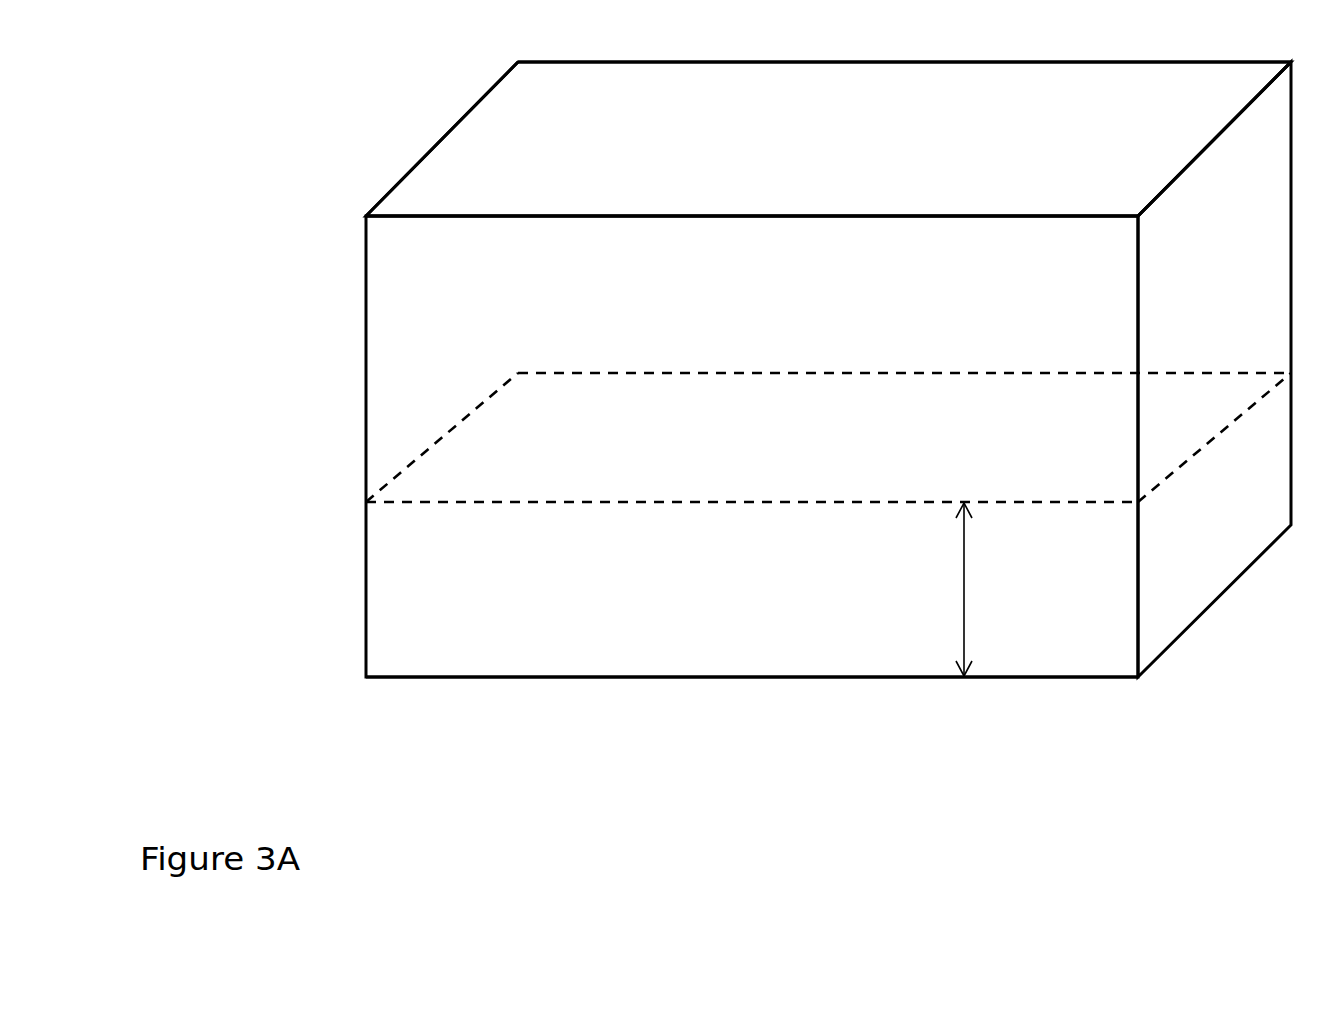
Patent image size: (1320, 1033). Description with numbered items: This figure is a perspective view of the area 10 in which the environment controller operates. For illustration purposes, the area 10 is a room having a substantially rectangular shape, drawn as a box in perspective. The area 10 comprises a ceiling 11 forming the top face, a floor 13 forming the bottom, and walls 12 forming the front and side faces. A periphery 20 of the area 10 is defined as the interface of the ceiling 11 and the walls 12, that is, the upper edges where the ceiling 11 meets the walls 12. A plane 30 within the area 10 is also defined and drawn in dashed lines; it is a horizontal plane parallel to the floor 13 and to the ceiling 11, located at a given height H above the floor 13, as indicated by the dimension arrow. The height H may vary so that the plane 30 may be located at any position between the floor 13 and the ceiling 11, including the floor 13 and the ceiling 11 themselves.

The area 10 is at (295, 130).
The ceiling 11 is at (762, 154).
The walls 12 is at (562, 624).
The floor 13 is at (775, 679).
The periphery 20 is at (948, 62).
The plane 30 is at (807, 439).